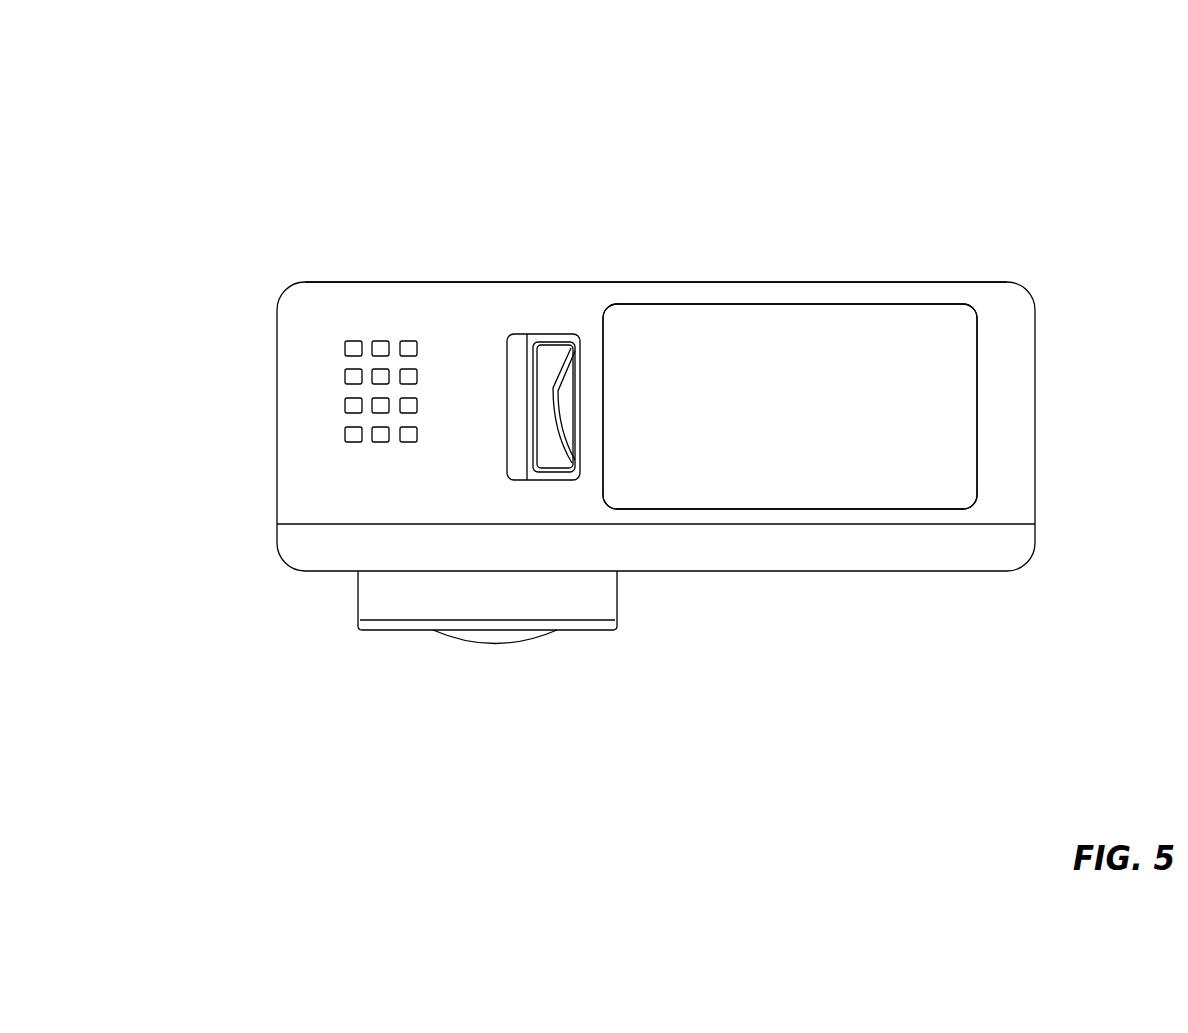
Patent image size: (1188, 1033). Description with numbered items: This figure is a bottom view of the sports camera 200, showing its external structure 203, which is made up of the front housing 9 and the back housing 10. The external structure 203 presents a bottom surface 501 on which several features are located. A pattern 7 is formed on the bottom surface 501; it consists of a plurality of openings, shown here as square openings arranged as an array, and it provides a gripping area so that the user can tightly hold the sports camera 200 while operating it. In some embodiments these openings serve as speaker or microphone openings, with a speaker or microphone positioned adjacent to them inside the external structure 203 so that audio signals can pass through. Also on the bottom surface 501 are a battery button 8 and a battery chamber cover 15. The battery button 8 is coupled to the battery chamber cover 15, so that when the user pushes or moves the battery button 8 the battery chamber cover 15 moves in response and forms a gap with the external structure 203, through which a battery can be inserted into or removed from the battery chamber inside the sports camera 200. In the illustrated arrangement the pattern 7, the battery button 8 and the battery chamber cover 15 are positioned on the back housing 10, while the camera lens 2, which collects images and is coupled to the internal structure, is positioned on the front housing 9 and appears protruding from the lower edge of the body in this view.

The sports camera 200 is at (680, 429).
The external structure 203 is at (1034, 419).
The back housing 10 is at (876, 289).
The front housing 9 is at (962, 556).
The pattern 7 is at (361, 339).
The battery button 8 is at (566, 397).
The battery chamber cover 15 is at (648, 444).
The bottom surface 501 is at (1007, 487).
The camera lens 2 is at (539, 604).